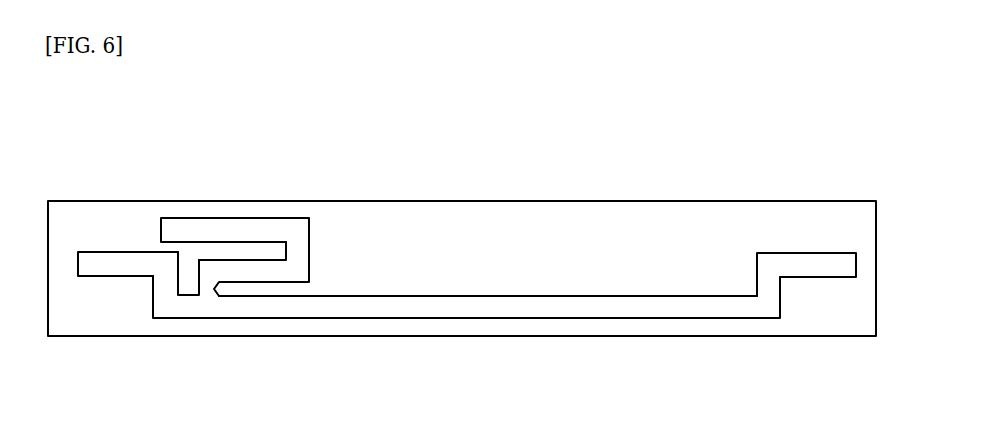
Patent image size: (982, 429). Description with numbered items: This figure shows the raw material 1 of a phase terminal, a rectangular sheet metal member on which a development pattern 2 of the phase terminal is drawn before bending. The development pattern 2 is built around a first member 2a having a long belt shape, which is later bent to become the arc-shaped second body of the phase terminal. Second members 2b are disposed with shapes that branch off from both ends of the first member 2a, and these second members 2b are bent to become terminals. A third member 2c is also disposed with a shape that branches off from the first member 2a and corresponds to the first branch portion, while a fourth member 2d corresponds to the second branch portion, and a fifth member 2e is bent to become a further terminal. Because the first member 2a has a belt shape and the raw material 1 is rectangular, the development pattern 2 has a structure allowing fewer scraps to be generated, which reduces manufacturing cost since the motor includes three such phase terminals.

The raw material 1 is at (489, 193).
The development pattern 2 is at (288, 212).
The first member 2a is at (403, 308).
The second members 2b is at (120, 268).
The third member 2c is at (200, 272).
The fourth member 2d is at (303, 240).
The fifth member 2e is at (238, 218).